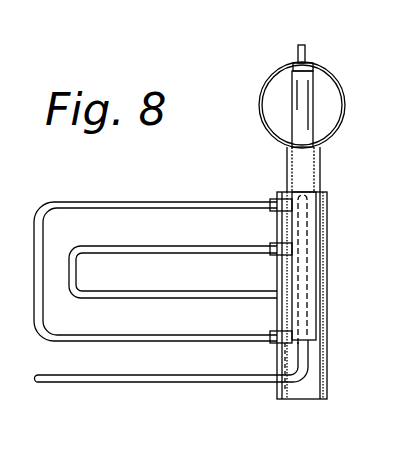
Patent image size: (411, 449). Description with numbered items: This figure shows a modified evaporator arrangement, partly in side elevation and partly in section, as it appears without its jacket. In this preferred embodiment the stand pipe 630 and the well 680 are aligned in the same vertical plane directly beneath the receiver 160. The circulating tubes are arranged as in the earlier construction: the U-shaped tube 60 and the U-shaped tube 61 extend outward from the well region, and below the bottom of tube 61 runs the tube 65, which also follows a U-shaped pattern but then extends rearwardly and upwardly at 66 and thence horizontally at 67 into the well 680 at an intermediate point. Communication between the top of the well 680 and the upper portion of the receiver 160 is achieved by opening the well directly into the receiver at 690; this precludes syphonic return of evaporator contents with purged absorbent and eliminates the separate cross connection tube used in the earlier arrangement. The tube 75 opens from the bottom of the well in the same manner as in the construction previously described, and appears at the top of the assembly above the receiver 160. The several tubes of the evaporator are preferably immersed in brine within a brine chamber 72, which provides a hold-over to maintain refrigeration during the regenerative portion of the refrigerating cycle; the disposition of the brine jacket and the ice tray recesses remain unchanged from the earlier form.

The tube 75 is at (304, 45).
The opening of well into receiver 690 is at (315, 63).
The receiver 160 is at (347, 108).
The stand pipe 630 is at (321, 174).
The horizontal portion of tube 67 is at (308, 194).
The well 680 is at (328, 288).
The rearwardly and upwardly extending portion of tube 66 is at (300, 312).
The U-shaped tube 61 is at (183, 203).
The U-shaped tube 60 is at (170, 248).
The tube 65 is at (178, 378).
The brine chamber 72 is at (394, 410).